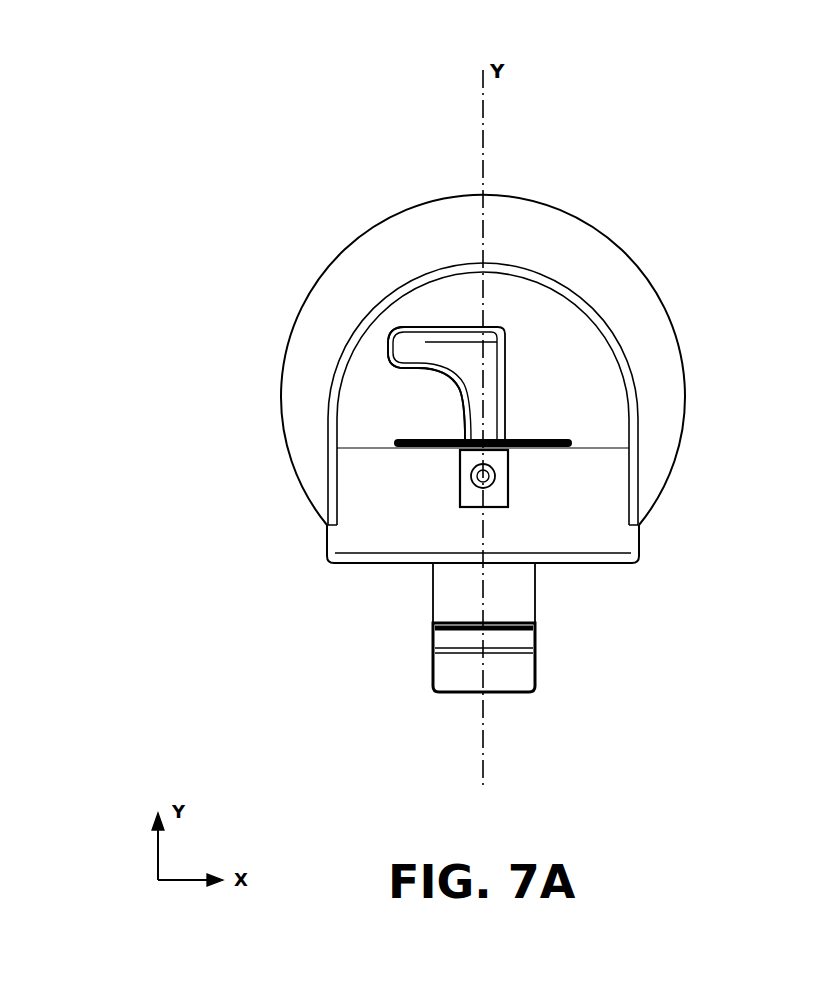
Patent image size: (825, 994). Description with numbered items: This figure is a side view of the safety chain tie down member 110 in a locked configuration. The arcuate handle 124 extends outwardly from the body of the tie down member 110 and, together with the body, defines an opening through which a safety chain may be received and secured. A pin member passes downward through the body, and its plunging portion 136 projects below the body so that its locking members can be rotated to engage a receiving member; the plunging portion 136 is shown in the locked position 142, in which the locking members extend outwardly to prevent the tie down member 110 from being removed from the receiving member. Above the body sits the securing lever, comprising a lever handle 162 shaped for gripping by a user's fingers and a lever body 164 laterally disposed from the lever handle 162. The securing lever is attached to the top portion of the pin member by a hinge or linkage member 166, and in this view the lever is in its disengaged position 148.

The safety chain tie down member 110 is at (215, 98).
The handle 124 is at (636, 262).
The plunging portion 136 is at (432, 662).
The locked position 142 is at (527, 673).
The disengaged position 148 is at (498, 392).
The lever handle 162 is at (397, 345).
The lever body 164 is at (468, 398).
The hinge or linkage member 166 is at (471, 470).